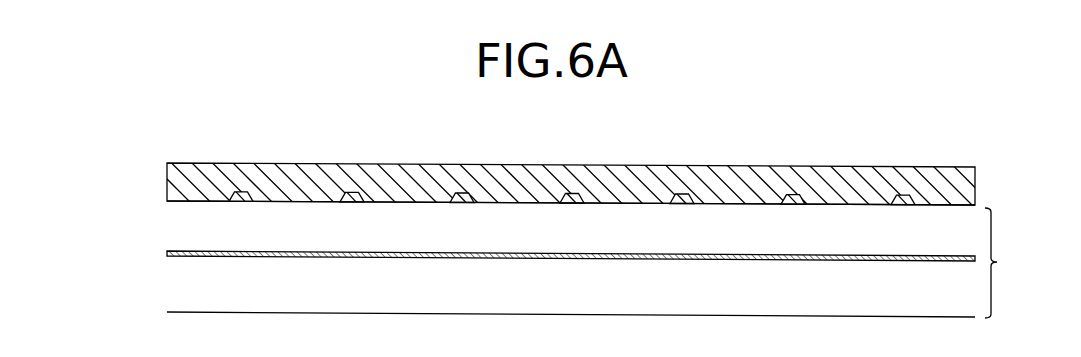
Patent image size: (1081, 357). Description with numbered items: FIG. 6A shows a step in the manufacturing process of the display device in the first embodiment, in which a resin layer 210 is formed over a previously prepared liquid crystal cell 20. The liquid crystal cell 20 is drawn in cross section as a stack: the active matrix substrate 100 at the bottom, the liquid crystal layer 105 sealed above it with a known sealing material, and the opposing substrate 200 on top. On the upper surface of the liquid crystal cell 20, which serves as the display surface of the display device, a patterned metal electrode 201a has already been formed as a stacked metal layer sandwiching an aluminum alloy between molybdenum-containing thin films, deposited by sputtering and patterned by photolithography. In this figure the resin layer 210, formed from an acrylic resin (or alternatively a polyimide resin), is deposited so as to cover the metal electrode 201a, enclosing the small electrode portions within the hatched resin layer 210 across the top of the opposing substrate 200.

The resin layer 210 is at (415, 163).
The metal electrode 201a is at (353, 204).
The opposing substrate 200 is at (171, 213).
The liquid crystal layer 105 is at (166, 252).
The active matrix substrate 100 is at (171, 288).
The liquid crystal cell 20 is at (1006, 263).